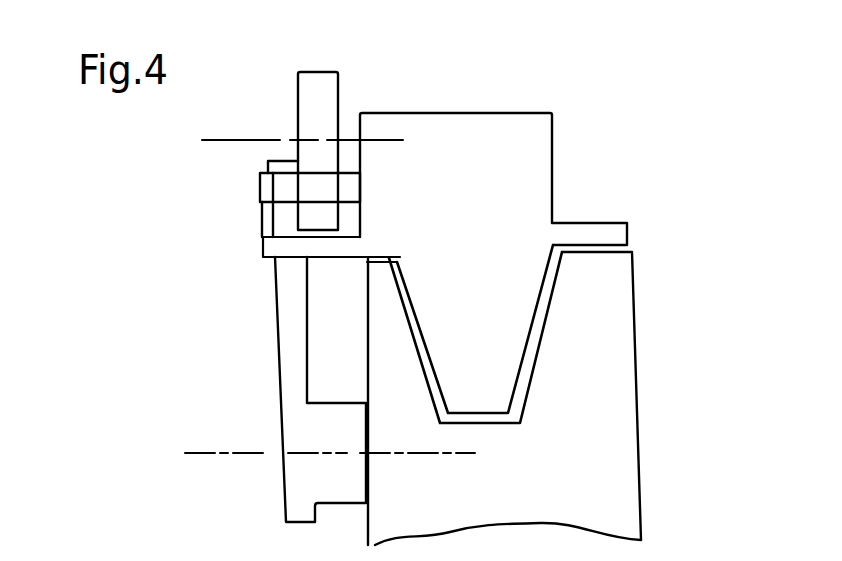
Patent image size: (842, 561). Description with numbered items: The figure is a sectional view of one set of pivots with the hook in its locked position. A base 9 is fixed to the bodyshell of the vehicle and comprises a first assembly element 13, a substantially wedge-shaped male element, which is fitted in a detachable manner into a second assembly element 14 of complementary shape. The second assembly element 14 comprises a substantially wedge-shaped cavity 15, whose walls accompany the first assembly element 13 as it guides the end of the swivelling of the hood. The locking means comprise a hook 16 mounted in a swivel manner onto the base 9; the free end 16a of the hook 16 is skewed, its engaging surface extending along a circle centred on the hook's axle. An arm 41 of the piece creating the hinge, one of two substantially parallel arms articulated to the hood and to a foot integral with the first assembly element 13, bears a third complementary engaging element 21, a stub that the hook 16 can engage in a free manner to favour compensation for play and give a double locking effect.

The base 9 is at (625, 478).
The first assembly element 13 is at (530, 160).
The second assembly element 14 is at (551, 307).
The cavity 15 is at (540, 348).
The hook 16 is at (288, 377).
The free end of the hook 16a is at (248, 455).
The third complementary engaging element 21 is at (258, 197).
The arm 41 is at (322, 70).